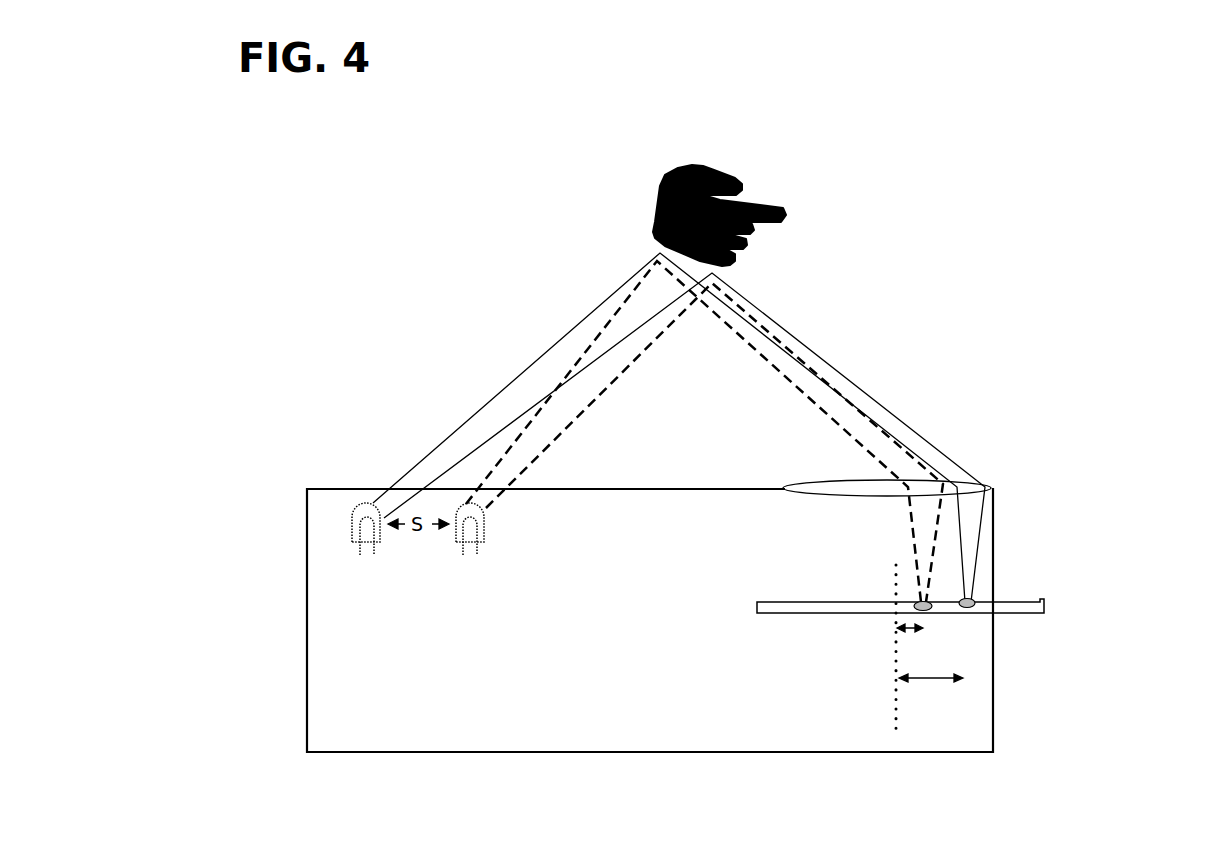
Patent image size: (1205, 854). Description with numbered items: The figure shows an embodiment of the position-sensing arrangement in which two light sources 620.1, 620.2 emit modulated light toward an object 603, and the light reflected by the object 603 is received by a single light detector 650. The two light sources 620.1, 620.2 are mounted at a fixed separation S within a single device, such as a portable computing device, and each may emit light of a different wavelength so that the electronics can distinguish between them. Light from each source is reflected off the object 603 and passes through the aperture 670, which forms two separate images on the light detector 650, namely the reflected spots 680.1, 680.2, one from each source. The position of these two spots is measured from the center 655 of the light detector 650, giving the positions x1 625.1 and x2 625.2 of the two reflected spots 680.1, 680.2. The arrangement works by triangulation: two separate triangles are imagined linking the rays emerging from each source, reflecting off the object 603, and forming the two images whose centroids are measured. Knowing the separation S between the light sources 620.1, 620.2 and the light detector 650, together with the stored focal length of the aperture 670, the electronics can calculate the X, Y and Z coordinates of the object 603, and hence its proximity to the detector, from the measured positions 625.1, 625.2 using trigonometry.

The object 603 is at (737, 221).
The light source 620.1 is at (468, 544).
The light source 620.2 is at (356, 544).
The aperture 670 is at (990, 488).
The reflected spot 680.1 is at (920, 600).
The reflected spot 680.2 is at (972, 600).
The light detector 650 is at (1046, 600).
The position x1 625.1 is at (945, 634).
The position x2 625.2 is at (983, 690).
The center of the light detector 655 is at (899, 718).